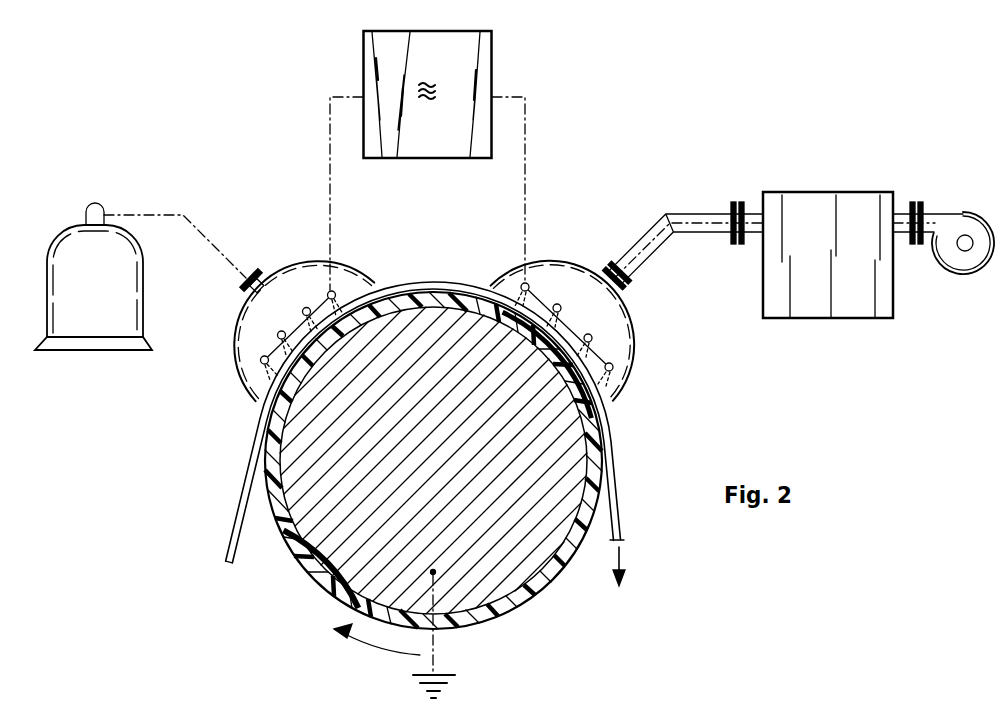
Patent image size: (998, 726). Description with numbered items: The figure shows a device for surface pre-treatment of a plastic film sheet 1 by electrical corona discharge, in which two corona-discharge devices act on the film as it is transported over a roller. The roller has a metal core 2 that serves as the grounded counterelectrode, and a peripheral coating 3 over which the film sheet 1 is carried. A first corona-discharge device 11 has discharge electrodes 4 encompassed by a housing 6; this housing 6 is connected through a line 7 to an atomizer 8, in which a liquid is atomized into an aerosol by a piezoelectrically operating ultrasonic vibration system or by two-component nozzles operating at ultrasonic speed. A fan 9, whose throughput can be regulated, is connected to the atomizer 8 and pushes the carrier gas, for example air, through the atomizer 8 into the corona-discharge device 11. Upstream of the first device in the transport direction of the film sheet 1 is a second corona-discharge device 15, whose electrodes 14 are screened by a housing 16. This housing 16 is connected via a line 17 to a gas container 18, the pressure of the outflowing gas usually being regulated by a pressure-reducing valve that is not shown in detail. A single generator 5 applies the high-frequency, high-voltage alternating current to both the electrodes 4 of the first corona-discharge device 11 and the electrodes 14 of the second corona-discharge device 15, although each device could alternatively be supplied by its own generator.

The film sheet 1 is at (617, 486).
The metal core 2 is at (526, 568).
The peripheral coating 3 is at (312, 572).
The discharge electrodes 4 is at (608, 364).
The generator 5 is at (466, 58).
The housing 6 is at (612, 390).
The line 7 is at (650, 242).
The atomizer 8 is at (853, 310).
The fan 9 is at (970, 262).
The first corona-discharge device 11 is at (550, 262).
The electrodes 14 is at (326, 296).
The second corona-discharge device 15 is at (288, 266).
The housing 16 is at (253, 396).
The line 17 is at (163, 215).
The gas container 18 is at (98, 325).